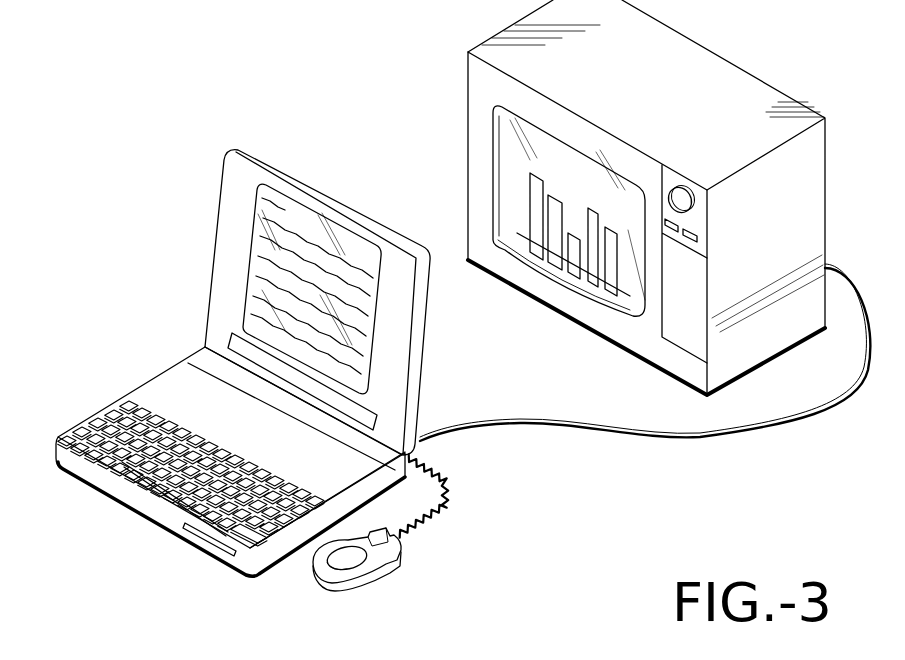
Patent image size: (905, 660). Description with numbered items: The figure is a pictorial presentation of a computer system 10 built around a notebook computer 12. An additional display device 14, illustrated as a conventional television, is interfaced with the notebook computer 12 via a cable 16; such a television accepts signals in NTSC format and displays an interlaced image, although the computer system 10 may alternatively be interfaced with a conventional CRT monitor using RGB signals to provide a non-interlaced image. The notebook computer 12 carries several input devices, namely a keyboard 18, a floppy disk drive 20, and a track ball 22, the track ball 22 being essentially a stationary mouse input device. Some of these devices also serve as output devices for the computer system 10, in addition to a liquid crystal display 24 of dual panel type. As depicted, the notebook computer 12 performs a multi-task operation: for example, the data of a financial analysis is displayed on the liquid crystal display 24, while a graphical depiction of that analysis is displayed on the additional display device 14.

The computer system 10 is at (436, 527).
The notebook computer 12 is at (150, 390).
The additional display device 14 is at (459, 153).
The cable 16 is at (614, 434).
The keyboard 18 is at (227, 377).
The floppy disk drive 20 is at (204, 542).
The track ball 22 is at (350, 563).
The liquid crystal display 24 is at (268, 240).